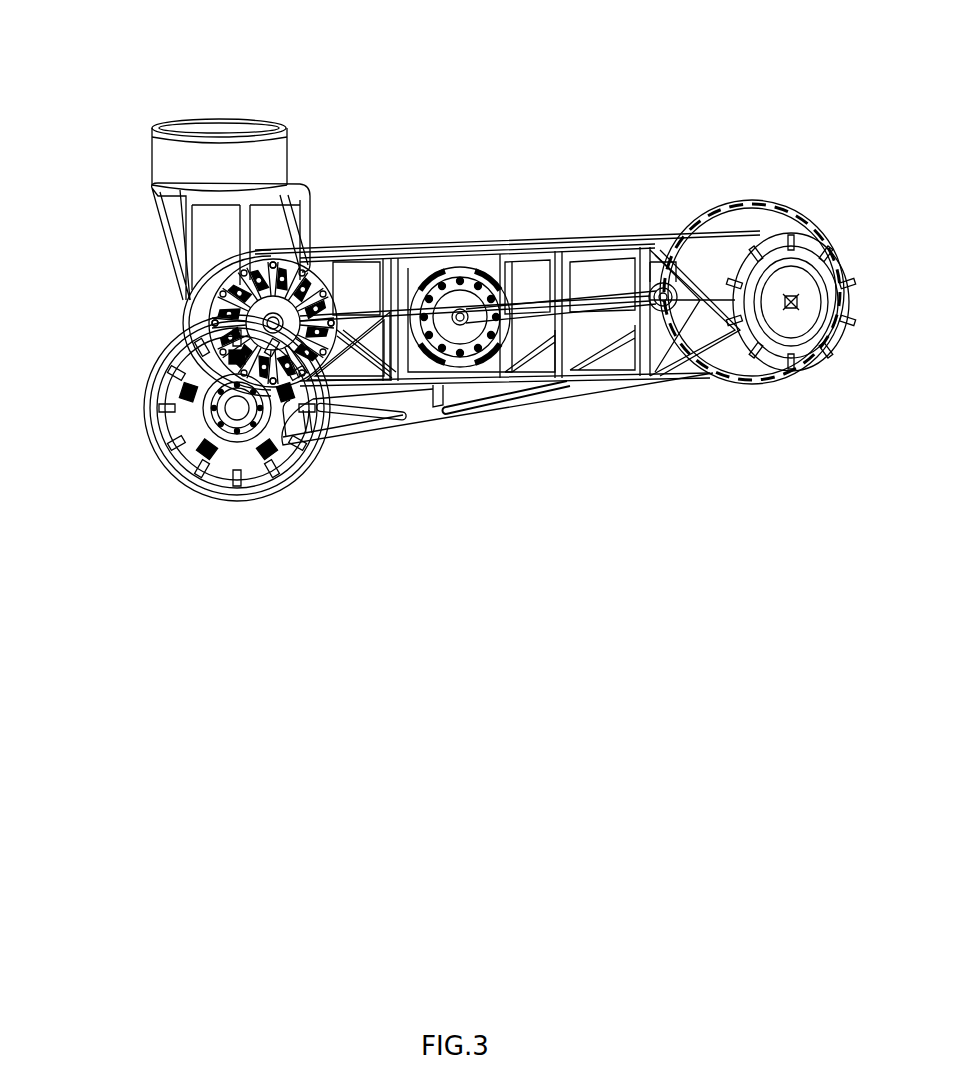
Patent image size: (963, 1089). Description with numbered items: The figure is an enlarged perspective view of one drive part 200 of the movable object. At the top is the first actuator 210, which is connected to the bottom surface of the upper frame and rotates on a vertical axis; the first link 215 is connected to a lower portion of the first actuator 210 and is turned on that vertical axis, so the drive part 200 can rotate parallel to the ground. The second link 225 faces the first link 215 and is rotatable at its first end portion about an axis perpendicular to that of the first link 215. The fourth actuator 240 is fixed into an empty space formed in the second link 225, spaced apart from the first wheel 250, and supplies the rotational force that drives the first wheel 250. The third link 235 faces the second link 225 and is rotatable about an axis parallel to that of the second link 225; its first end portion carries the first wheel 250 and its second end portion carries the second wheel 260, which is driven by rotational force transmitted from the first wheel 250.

The drive part 200 is at (452, 128).
The first actuator 210 is at (228, 160).
The first link 215 is at (187, 225).
The second link 225 is at (357, 248).
The third link 235 is at (380, 428).
The fourth actuator 240 is at (468, 258).
The first wheel 250 is at (712, 197).
The second wheel 260 is at (148, 451).